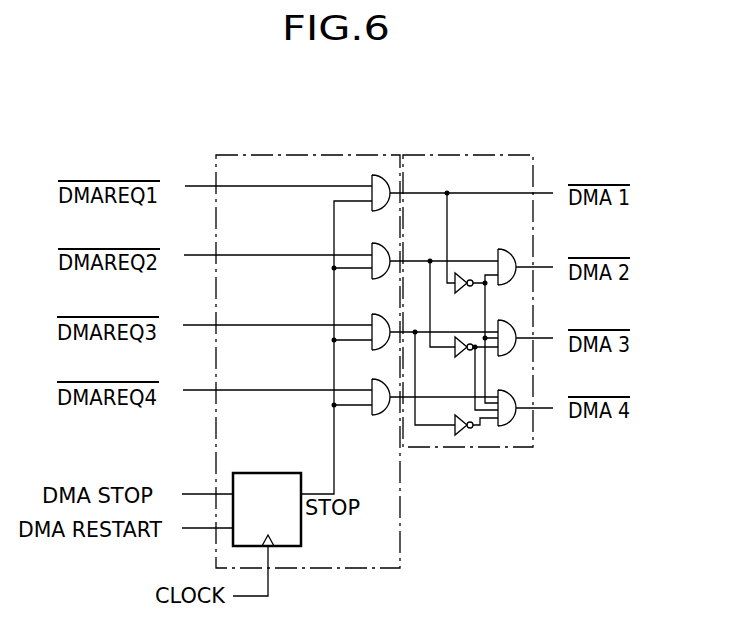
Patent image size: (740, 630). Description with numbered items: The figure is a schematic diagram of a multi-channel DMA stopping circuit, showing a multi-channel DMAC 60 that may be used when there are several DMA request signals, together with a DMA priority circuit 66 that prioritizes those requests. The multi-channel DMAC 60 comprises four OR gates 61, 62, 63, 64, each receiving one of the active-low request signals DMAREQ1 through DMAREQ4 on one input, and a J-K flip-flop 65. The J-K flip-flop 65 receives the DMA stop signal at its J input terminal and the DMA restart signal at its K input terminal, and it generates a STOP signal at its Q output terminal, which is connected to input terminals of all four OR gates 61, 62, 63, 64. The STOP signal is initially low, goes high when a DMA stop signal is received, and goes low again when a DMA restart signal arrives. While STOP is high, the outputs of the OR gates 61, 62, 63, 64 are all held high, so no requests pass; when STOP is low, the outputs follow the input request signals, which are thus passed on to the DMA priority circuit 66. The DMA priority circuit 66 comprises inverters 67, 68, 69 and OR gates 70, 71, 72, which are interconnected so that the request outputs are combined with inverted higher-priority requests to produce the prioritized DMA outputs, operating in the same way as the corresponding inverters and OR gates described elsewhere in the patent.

The multi-channel DMAC 60 is at (258, 155).
The OR gate 61 is at (368, 180).
The OR gate 62 is at (373, 246).
The OR gate 63 is at (372, 316).
The OR gate 64 is at (372, 383).
The J-K flip-flop 65 is at (302, 527).
The DMA priority circuit 66 is at (423, 155).
The inverter 67 is at (457, 293).
The inverter 68 is at (456, 356).
The inverter 69 is at (455, 435).
The OR gate 70 is at (503, 248).
The OR gate 71 is at (503, 320).
The OR gate 72 is at (508, 385).